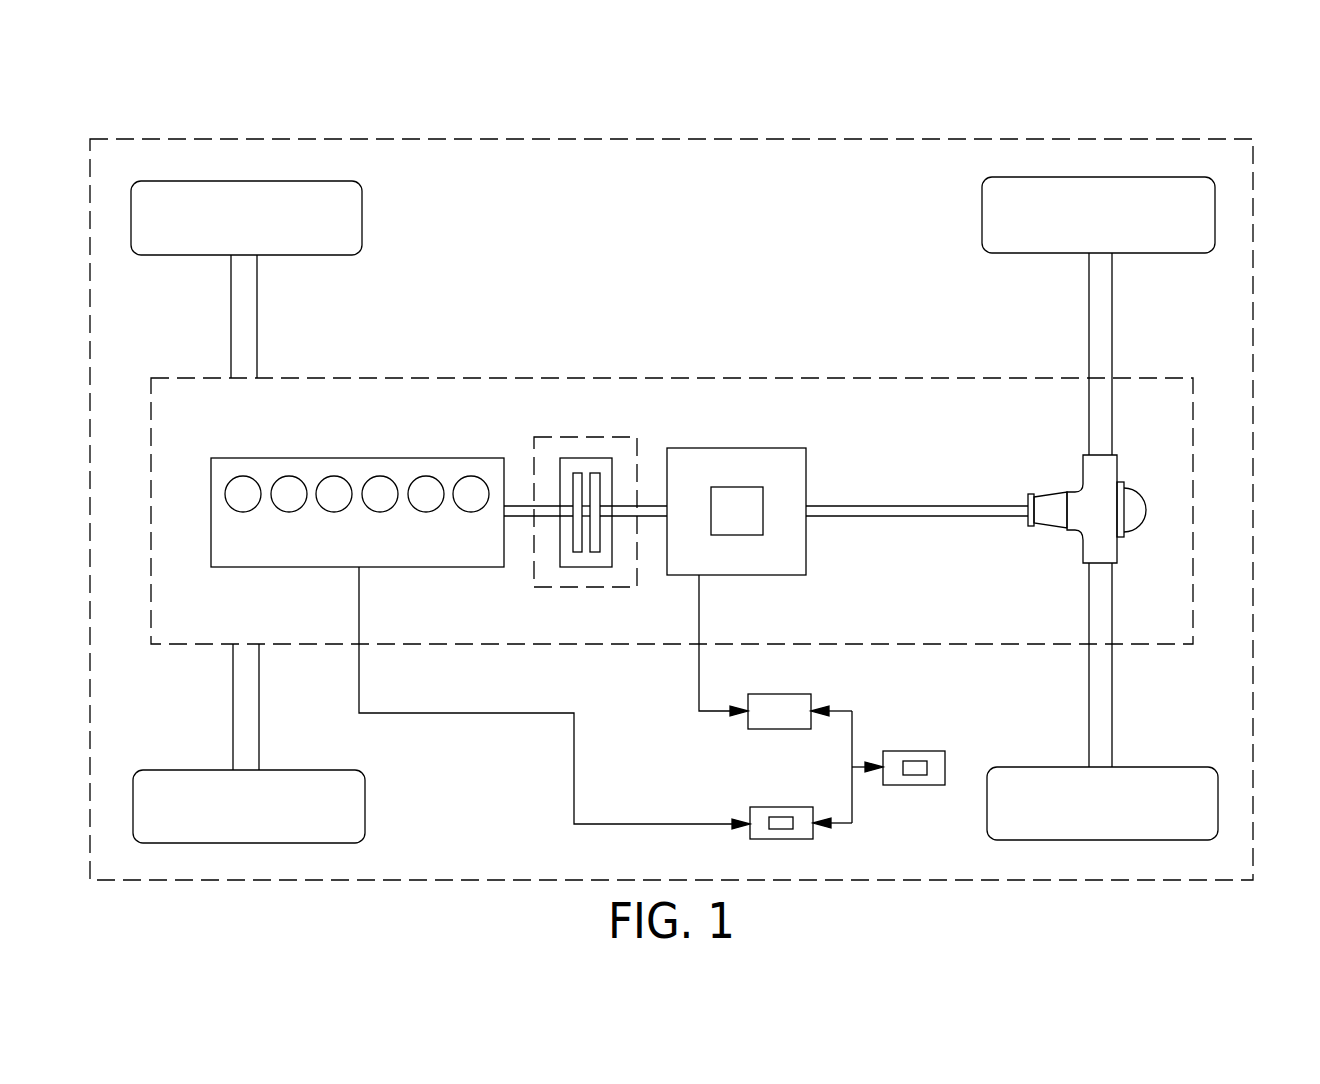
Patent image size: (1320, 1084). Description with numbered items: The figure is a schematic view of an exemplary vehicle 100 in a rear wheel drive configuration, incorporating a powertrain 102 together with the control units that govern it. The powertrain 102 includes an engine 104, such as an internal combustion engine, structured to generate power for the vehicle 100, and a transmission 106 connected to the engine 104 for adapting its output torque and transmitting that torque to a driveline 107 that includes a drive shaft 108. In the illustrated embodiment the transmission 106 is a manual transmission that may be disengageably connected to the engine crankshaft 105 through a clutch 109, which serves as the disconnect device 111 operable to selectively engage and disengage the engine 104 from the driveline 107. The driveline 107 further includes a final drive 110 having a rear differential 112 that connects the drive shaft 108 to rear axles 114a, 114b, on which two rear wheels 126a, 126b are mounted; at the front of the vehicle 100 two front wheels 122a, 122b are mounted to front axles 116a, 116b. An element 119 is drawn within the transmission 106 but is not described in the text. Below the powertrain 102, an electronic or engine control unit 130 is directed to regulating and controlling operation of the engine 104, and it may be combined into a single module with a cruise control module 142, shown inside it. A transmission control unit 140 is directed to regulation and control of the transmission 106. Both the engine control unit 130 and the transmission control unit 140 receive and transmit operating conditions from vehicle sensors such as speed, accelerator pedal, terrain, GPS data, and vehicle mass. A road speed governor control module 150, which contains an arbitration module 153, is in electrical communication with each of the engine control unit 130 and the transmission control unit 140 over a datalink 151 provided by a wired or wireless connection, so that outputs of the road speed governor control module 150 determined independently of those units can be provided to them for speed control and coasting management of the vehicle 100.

The vehicle 100 is at (1052, 118).
The powertrain 102 is at (965, 378).
The engine 104 is at (380, 551).
The engine crankshaft 105 is at (517, 520).
The transmission 106 is at (751, 575).
The driveline 107 is at (860, 405).
The drive shaft 108 is at (940, 518).
The clutch 109 is at (592, 567).
The final drive 110 is at (1150, 517).
The disconnect device 111 is at (587, 437).
The rear differential 112 is at (1086, 496).
The rear axle 114a is at (1112, 315).
The rear axle 114b is at (1113, 708).
The front axle 116a is at (257, 310).
The front axle 116b is at (233, 705).
The transmission sensor 119 is at (735, 487).
The front wheel 122a is at (273, 232).
The front wheel 122b is at (278, 821).
The rear wheel 126a is at (1128, 229).
The rear wheel 126b is at (1130, 817).
The engine control unit 130 is at (778, 807).
The transmission control unit 140 is at (778, 694).
The cruise control module 142 is at (782, 829).
The road speed governor control module 150 is at (960, 758).
The datalink 151 is at (852, 730).
The arbitration module 153 is at (915, 775).